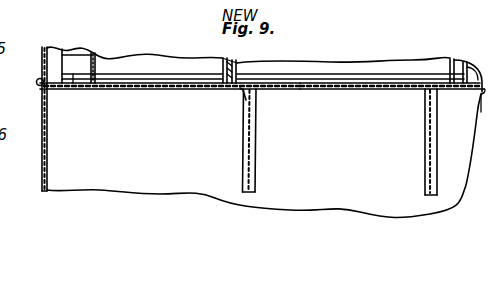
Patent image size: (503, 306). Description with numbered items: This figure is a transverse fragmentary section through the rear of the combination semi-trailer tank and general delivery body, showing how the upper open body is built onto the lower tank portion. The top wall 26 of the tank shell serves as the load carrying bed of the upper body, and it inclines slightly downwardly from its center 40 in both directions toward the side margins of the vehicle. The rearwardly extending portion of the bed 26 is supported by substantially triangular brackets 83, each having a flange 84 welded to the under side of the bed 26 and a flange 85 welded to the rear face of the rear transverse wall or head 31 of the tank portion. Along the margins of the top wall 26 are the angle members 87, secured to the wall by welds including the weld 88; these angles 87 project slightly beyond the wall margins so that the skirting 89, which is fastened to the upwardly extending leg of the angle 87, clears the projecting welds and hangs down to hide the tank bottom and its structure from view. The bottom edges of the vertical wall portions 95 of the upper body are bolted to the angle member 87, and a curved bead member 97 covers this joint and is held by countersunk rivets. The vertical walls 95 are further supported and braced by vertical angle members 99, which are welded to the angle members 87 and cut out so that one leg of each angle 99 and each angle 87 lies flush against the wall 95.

The top wall 26 is at (146, 89).
The rear transverse wall 31 is at (141, 196).
The center 40 is at (349, 89).
The bracket 83 is at (256, 102).
The flange 84 is at (244, 94).
The flange 85 is at (247, 152).
The angle member 87 is at (44, 83).
The weld 88 is at (72, 82).
The skirting 89 is at (42, 150).
The vertical wall portion 95 is at (42, 50).
The curved bead member 97 is at (37, 80).
The vertical angle member 99 is at (237, 62).